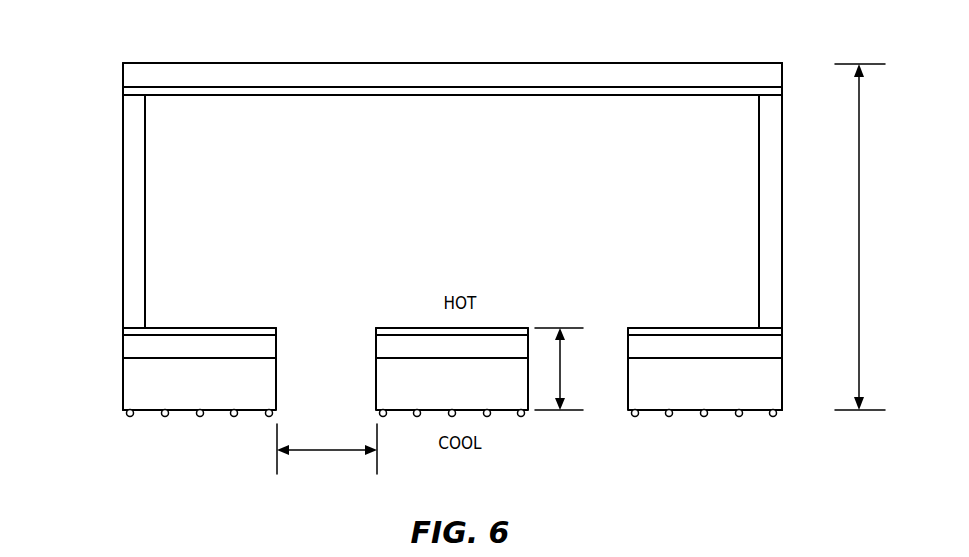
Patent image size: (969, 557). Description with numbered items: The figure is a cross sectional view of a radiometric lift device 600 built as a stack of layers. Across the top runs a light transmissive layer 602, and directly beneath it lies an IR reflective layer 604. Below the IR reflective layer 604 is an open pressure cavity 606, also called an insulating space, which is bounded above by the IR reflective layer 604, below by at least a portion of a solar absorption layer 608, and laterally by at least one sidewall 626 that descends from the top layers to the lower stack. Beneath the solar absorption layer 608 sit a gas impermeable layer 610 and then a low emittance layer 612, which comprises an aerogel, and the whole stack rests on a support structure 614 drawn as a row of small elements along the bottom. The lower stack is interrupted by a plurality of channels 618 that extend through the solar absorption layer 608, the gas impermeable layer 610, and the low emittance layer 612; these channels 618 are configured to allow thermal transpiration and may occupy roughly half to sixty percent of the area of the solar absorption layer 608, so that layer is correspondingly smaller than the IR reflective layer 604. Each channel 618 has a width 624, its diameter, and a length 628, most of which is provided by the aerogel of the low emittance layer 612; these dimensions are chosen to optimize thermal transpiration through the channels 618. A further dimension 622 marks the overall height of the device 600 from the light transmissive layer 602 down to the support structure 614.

The radiometric lift device 600 is at (203, 43).
The light transmissive layer 602 is at (123, 75).
The IR reflective layer 604 is at (123, 91).
The pressure cavity 606 is at (167, 162).
The solar absorption layer 608 is at (123, 331).
The gas impermeable layer 610 is at (123, 350).
The low emittance layer 612 is at (123, 380).
The support structure 614 is at (200, 417).
The channels 618 is at (358, 388).
The overall height 622 is at (858, 280).
The width 624 is at (323, 453).
The sidewall 626 is at (783, 194).
The length 628 is at (565, 360).